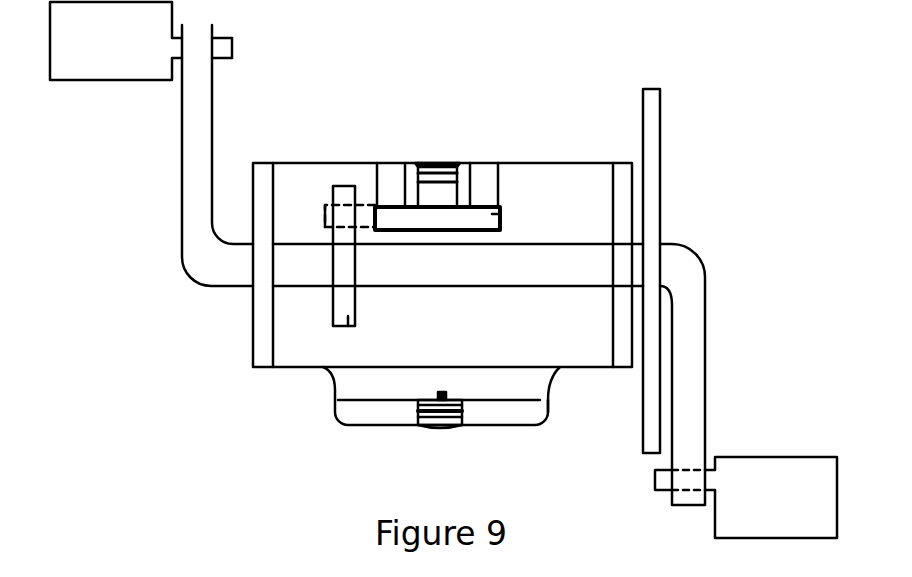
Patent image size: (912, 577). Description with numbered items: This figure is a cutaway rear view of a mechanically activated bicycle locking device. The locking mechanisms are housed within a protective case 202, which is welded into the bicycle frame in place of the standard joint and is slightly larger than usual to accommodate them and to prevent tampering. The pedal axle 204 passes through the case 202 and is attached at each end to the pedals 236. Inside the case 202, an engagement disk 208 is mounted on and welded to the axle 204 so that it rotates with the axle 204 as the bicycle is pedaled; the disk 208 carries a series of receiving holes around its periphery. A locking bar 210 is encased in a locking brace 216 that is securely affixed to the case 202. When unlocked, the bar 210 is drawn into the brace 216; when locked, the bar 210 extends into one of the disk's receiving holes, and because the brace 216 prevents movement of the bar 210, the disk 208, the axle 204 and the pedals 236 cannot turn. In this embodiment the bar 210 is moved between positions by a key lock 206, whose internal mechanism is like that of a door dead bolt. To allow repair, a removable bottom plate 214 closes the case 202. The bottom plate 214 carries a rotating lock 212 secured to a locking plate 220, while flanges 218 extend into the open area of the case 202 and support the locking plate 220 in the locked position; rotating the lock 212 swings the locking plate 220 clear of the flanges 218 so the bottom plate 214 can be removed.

The protective case 202 is at (298, 163).
The pedal axle 204 is at (220, 273).
The key lock 206 is at (437, 161).
The engagement disk 208 is at (348, 326).
The locking bar 210 is at (500, 213).
The rotating lock 212 is at (440, 428).
The bottom plate 214 is at (378, 415).
The locking brace 216 is at (376, 204).
The flanges 218 is at (557, 403).
The locking plate 220 is at (487, 388).
The pedals 236 is at (443, 270).